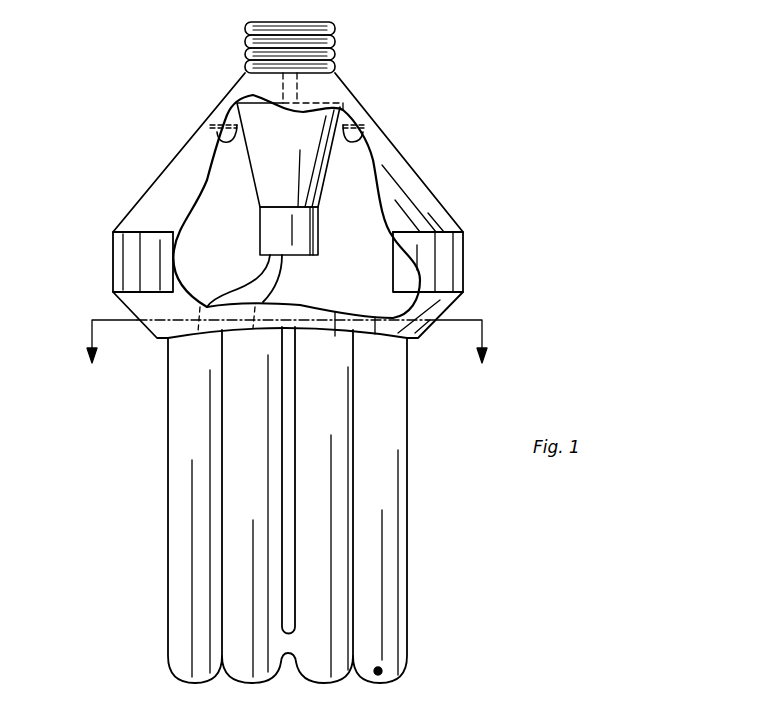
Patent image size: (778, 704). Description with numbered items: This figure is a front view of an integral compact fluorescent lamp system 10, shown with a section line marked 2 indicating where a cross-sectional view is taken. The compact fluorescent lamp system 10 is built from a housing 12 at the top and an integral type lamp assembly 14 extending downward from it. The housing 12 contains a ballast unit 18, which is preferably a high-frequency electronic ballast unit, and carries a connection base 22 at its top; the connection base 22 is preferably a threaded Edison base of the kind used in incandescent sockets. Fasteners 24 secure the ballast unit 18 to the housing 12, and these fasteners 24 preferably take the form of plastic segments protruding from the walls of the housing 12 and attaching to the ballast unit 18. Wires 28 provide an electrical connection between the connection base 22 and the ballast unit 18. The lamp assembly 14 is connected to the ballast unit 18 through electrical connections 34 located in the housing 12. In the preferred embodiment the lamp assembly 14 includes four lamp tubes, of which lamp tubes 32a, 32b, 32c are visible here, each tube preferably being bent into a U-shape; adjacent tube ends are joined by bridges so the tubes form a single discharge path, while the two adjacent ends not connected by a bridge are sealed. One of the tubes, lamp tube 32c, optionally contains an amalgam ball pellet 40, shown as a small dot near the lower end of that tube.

The integral compact fluorescent lamp system 10 is at (102, 118).
The housing 12 is at (400, 172).
The integral type lamp assembly 14 is at (408, 440).
The ballast unit 18 is at (330, 157).
The connection base 22 is at (253, 43).
The fasteners 24 is at (215, 130).
The wires 28 is at (283, 93).
The lamp tube 32a is at (193, 448).
The lamp tube 32b is at (238, 615).
The lamp tube 32c is at (390, 578).
The electrical connections 34 is at (277, 296).
The amalgam ball pellet 40 is at (380, 673).
The section line 2- 2 is at (286, 357).